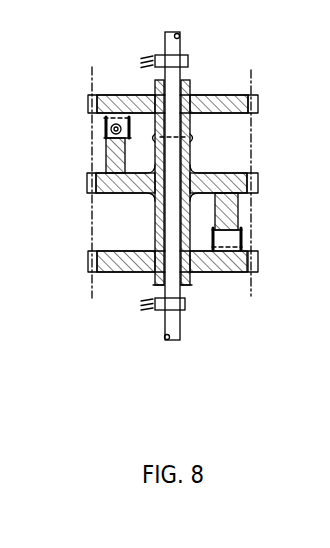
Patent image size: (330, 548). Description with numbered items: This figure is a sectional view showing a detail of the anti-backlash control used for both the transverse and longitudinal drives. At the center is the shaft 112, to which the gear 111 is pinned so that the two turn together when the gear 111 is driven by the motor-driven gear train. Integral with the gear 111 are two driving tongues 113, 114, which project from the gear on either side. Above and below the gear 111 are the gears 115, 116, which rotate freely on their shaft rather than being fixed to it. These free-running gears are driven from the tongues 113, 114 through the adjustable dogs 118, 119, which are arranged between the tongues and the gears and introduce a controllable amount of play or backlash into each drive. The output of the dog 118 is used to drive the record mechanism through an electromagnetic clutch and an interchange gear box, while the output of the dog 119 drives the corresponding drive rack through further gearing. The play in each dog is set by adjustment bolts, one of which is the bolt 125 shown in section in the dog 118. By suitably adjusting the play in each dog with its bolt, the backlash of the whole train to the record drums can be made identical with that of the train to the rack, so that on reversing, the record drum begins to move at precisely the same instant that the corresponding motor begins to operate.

The gear 111 is at (230, 173).
The shaft 112 is at (170, 320).
The driving tongue 113 is at (106, 153).
The driving tongue 114 is at (240, 220).
The gear 115 is at (240, 95).
The gear 116 is at (112, 273).
The adjustable dog 118 is at (103, 128).
The adjustable dog 119 is at (256, 243).
The bolt 125 is at (109, 130).